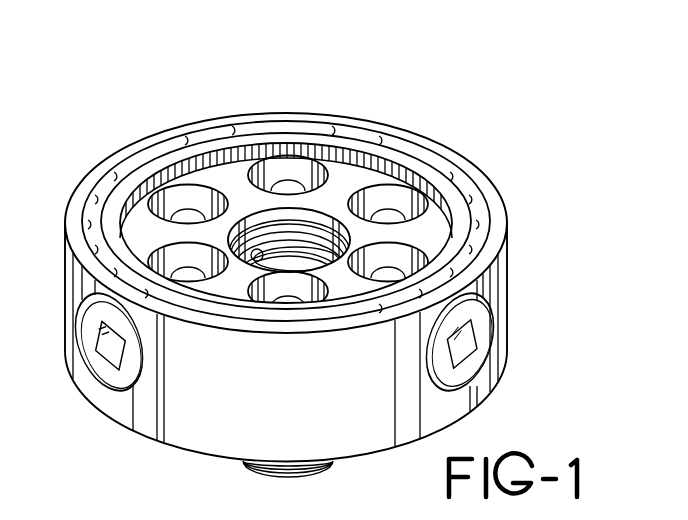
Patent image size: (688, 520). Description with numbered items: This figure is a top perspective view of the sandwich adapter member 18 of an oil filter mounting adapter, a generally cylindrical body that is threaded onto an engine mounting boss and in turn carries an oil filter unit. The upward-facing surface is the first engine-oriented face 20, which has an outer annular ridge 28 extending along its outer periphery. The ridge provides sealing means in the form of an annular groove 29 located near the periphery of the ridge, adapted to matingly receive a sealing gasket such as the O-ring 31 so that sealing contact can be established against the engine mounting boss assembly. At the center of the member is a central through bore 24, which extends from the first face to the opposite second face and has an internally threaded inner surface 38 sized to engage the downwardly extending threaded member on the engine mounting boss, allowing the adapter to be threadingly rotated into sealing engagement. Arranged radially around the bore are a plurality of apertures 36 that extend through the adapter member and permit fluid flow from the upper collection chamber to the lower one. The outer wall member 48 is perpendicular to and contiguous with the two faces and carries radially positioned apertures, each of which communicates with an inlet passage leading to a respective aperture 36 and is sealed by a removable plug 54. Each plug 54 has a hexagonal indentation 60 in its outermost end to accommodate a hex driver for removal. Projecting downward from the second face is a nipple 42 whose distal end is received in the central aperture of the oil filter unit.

The sandwich adapter member 18 is at (514, 272).
The first engine-oriented face 20 is at (132, 138).
The central through bore 24 is at (308, 226).
The outer annular ridge 28 is at (493, 203).
The annular groove 29 is at (192, 130).
The O-ring 31 is at (226, 132).
The apertures 36 is at (403, 193).
The internally threaded inner surface 38 is at (250, 257).
The nipple 42 is at (238, 465).
The outer wall member 48 is at (340, 409).
The removable plugs 54 is at (90, 312).
The hexagonal indentation 60 is at (470, 352).